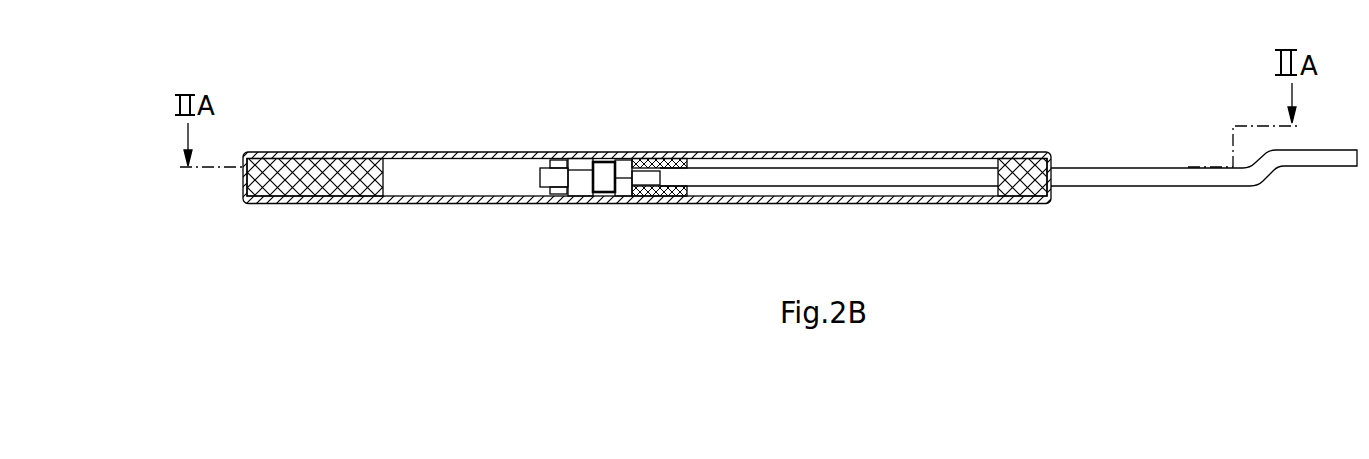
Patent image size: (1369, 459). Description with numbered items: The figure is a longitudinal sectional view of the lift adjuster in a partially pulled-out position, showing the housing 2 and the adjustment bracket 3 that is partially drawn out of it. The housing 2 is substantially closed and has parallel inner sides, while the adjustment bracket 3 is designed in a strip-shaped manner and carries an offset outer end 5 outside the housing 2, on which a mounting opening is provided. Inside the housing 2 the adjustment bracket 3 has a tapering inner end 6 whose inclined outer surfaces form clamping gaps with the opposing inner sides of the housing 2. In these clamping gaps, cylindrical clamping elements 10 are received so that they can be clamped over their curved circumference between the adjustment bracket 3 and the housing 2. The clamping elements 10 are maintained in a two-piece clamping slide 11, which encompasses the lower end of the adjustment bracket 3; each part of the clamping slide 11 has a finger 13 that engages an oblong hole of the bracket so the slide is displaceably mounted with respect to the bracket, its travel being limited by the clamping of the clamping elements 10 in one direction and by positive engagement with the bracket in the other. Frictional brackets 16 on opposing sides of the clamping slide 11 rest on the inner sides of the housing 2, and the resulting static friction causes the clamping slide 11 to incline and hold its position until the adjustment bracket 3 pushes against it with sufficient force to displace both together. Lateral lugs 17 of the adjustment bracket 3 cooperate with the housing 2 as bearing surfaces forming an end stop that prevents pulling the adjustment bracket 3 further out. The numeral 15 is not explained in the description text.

The housing 2 is at (425, 151).
The adjustment bracket 3 is at (1120, 178).
The offset outer end 5 is at (1312, 158).
The tapering inner end 6 is at (540, 178).
The clamping elements 10 is at (607, 170).
The clamping slide 11 is at (622, 187).
The finger 13 is at (582, 163).
The support 15 is at (558, 163).
The frictional brackets 16 is at (683, 162).
The lateral lugs 17 is at (650, 177).